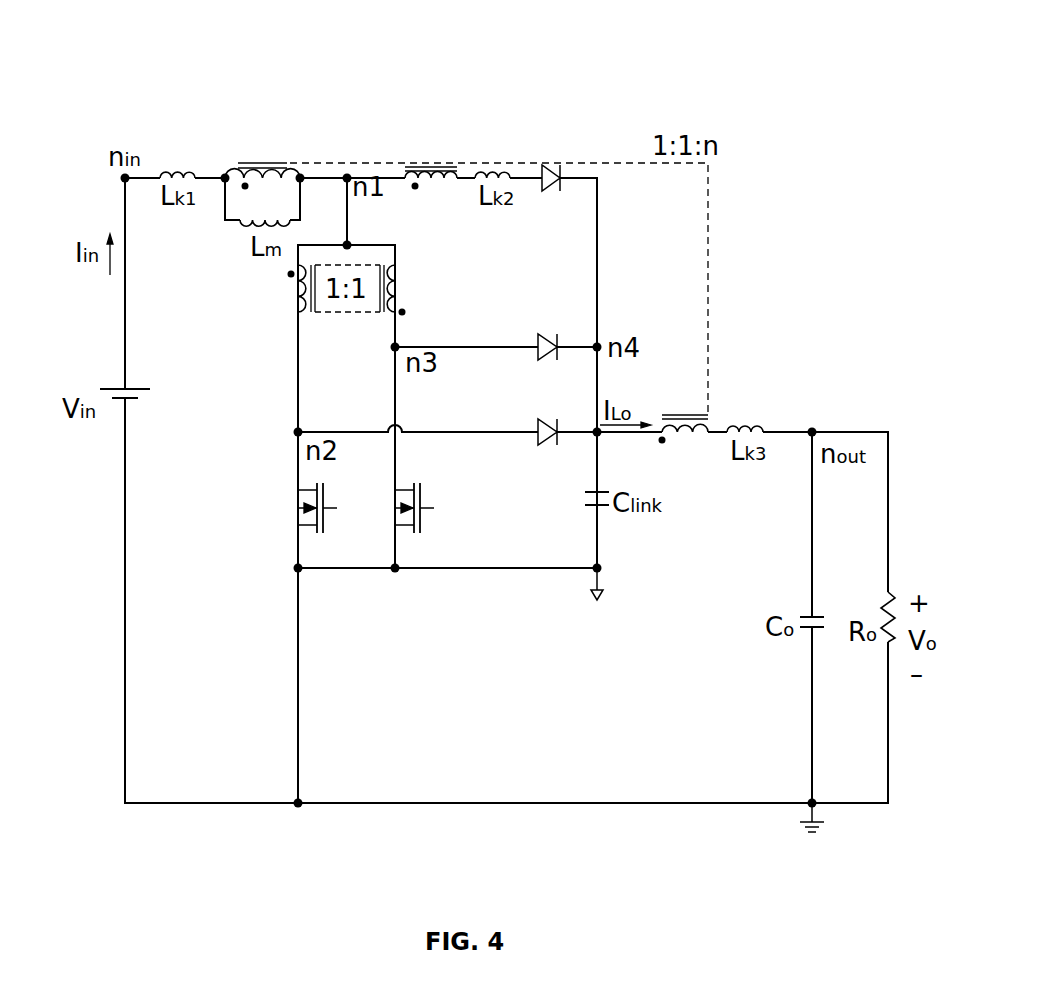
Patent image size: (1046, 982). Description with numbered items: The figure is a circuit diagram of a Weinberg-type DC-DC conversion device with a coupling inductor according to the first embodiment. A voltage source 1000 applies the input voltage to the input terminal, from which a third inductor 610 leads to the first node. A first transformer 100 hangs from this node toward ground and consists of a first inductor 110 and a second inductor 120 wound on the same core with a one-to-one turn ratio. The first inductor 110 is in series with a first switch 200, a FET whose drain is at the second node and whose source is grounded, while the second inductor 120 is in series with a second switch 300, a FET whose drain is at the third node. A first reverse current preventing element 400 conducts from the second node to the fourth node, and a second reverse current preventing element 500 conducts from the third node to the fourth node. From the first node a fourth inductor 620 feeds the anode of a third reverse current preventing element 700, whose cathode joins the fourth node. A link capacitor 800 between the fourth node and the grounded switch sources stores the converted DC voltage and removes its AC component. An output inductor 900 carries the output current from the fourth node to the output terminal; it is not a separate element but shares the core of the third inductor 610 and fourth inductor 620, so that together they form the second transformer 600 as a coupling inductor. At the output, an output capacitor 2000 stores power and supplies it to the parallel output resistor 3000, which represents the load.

The first transformer 100 is at (374, 274).
The first inductor 110 is at (298, 300).
The second inductor 120 is at (402, 268).
The first switch 200 is at (298, 513).
The second switch 300 is at (395, 517).
The first reverse current preventing element 400 is at (538, 423).
The second reverse current preventing element 500 is at (543, 334).
The second transformer 600 is at (383, 122).
The third inductor 610 is at (232, 174).
The fourth inductor 620 is at (457, 170).
The third reverse current preventing element 700 is at (568, 164).
The link capacitor 800 is at (590, 490).
The output inductor 900 is at (710, 425).
The voltage source 1000 is at (110, 388).
The output capacitor 2000 is at (805, 616).
The output resistor 3000 is at (889, 592).